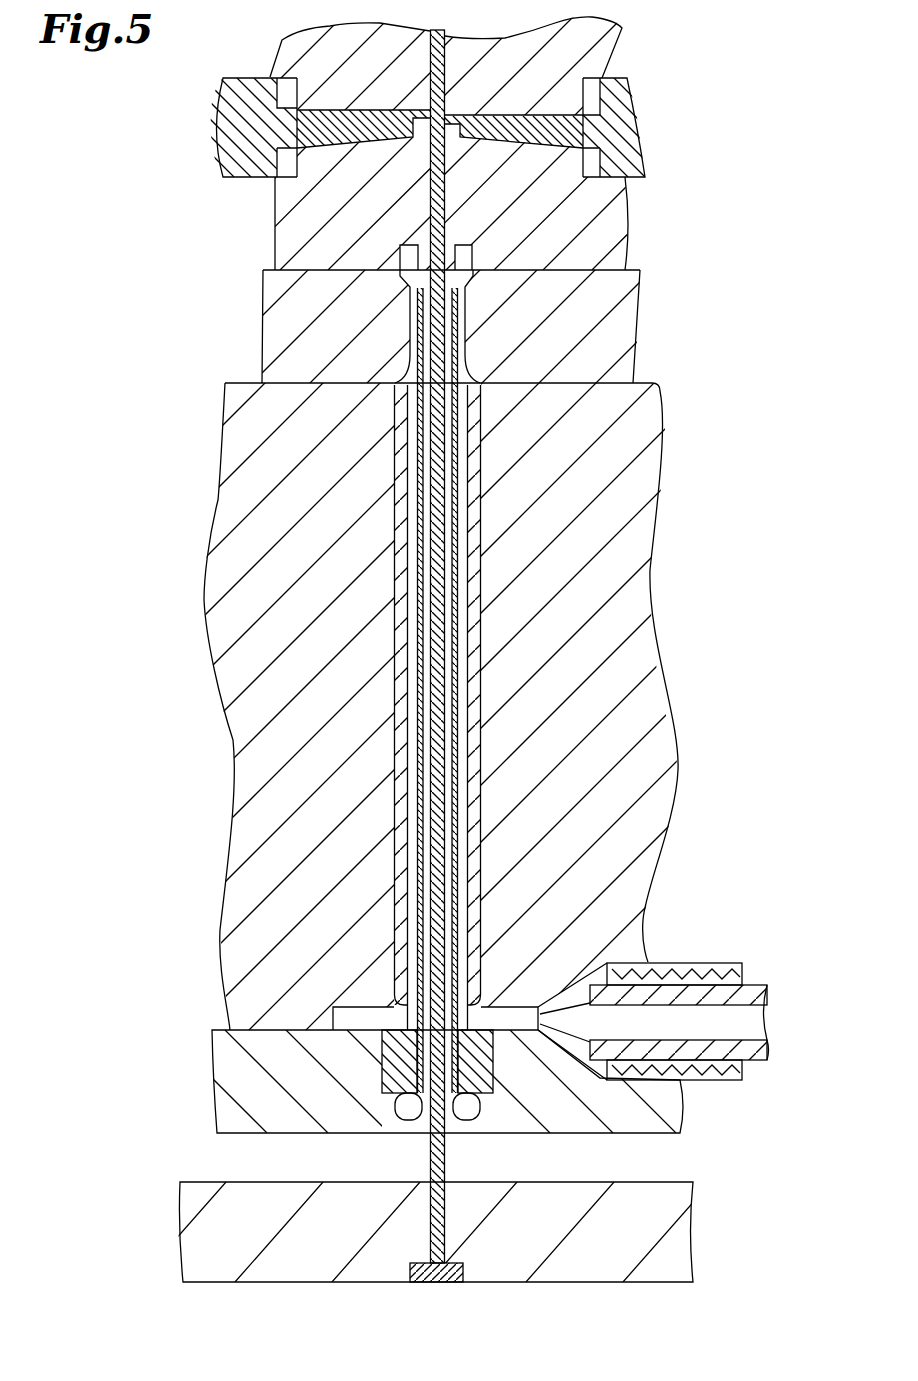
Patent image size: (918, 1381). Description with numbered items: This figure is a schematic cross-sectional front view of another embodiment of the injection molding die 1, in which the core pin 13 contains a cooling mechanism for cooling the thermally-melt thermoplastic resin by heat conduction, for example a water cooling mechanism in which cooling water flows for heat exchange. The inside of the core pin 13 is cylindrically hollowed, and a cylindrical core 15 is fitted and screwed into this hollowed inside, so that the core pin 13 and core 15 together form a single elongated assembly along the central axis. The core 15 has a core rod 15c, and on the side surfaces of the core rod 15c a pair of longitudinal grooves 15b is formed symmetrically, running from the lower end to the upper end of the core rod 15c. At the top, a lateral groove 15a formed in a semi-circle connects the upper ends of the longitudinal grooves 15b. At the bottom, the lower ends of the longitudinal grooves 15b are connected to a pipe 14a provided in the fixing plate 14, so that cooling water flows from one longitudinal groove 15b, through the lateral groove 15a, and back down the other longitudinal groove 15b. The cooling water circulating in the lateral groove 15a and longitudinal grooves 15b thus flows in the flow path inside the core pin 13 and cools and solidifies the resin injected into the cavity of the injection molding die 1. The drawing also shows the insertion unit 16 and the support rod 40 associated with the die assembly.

The injection molding die 1 is at (125, 237).
The core pin 13 is at (410, 678).
The fixing plate 14 is at (227, 1053).
The pipe 14a is at (463, 1108).
The core 15 is at (603, 690).
The lateral groove 15a is at (457, 383).
The longitudinal groove 15b is at (453, 423).
The core rod 15c is at (450, 493).
The insertion unit 16 is at (455, 890).
The support rod 40 is at (437, 568).